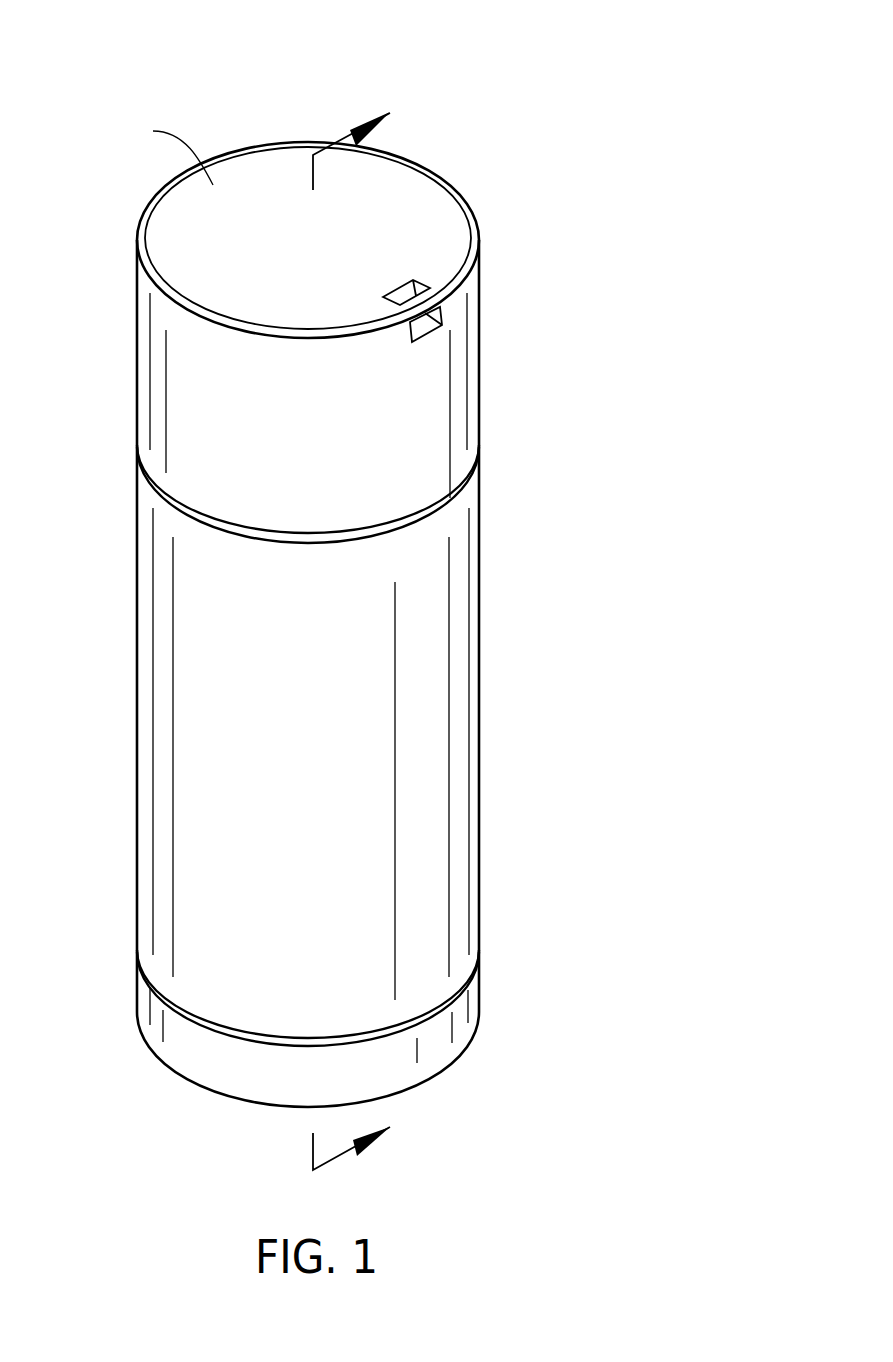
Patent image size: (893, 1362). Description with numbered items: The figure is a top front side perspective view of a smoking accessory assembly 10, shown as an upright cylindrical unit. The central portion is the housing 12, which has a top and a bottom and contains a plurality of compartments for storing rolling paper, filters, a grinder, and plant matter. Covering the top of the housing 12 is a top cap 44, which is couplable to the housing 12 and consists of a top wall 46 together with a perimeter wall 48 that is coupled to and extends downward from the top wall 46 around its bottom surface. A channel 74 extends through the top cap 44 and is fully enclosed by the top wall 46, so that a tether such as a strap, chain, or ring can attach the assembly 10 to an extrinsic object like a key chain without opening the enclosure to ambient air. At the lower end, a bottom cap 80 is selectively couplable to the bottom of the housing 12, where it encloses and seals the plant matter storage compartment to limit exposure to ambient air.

The smoking accessory assembly 10 is at (399, 588).
The housing 12 is at (373, 786).
The top cap 44 is at (318, 285).
The top wall 46 is at (294, 223).
The perimeter wall 48 is at (150, 360).
The channel 74 is at (427, 327).
The bottom cap 80 is at (460, 1028).